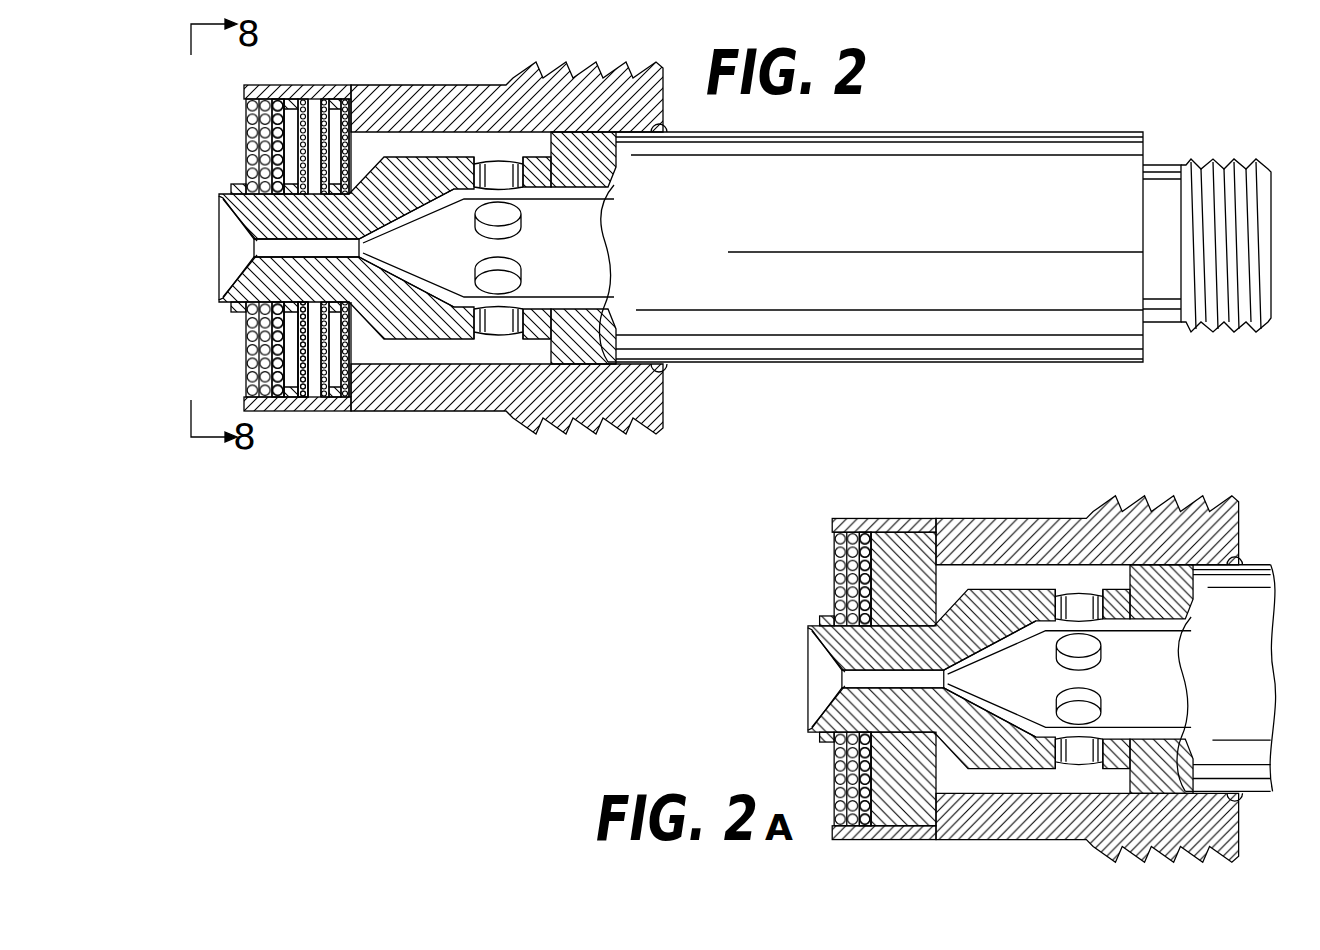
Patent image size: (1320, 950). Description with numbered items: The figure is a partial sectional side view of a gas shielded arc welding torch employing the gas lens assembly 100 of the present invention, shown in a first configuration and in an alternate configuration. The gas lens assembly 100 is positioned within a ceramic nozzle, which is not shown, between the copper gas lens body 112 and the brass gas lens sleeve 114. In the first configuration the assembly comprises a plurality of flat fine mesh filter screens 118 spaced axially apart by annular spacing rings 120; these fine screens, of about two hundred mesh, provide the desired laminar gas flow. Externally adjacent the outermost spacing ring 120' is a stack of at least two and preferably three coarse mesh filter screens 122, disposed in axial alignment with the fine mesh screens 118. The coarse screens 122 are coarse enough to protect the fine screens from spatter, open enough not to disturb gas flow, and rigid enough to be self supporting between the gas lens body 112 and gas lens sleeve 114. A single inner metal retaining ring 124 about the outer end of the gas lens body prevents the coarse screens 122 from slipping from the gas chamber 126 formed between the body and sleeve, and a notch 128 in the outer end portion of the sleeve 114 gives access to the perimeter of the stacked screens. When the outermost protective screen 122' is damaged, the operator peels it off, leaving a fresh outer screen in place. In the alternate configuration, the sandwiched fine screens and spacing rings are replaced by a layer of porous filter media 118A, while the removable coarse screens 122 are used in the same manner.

In FIG. 2, the gas lens assembly 100 is at (372, 148).
In FIG. 2A, the gas lens assembly 100 is at (999, 678).
In FIG. 2, the gas lens body 112 is at (454, 152).
In FIG. 2A, the gas lens body 112 is at (1018, 582).
In FIG. 2, the gas lens sleeve 114 is at (577, 417).
In FIG. 2A, the gas lens sleeve 114 is at (1150, 497).
In FIG. 2, the fine mesh filter screens 118 is at (285, 100).
In FIG. 2A, the porous filter media 118A is at (890, 530).
In FIG. 2, the spacing rings 120 is at (339, 252).
In FIG. 2, the outermost spacing ring 120' is at (245, 349).
In FIG. 2, the coarse mesh filter screens 122 is at (216, 248).
In FIG. 2A, the coarse mesh filter screens 122 is at (798, 677).
In FIG. 2, the outermost protective screen 122' is at (214, 248).
In FIG. 2A, the outermost protective screen 122' is at (798, 679).
In FIG. 2, the inner metal retaining ring 124 is at (232, 182).
In FIG. 2A, the inner metal retaining ring 124 is at (812, 612).
In FIG. 2, the gas chamber 126 is at (372, 336).
In FIG. 2, the notch 128 is at (250, 88).
In FIG. 2A, the notch 128 is at (845, 517).